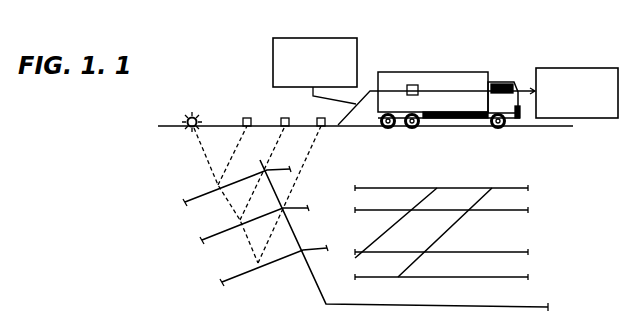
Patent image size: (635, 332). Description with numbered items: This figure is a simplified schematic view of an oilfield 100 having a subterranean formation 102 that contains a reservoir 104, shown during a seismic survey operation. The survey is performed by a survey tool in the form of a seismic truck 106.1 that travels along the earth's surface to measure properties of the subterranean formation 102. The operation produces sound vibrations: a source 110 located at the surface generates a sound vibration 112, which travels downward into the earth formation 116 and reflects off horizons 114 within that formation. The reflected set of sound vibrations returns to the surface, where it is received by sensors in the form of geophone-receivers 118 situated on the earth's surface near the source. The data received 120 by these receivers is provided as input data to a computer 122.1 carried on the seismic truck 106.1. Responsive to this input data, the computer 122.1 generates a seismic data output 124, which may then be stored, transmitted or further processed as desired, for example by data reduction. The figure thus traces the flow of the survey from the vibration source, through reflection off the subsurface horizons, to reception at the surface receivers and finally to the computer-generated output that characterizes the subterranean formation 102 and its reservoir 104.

The oilfield 100 is at (567, 47).
The subterranean formation 102 is at (507, 180).
The reservoir 104 is at (511, 238).
The seismic truck 106.1 is at (477, 72).
The source 110 is at (187, 115).
The sound vibration 112 is at (234, 160).
The horizons 114 is at (198, 197).
The earth formation 116 is at (310, 284).
The geophone-receivers 118 is at (320, 118).
The data received 120 is at (297, 38).
The computer 122.1 is at (416, 85).
The seismic data output 124 is at (591, 67).